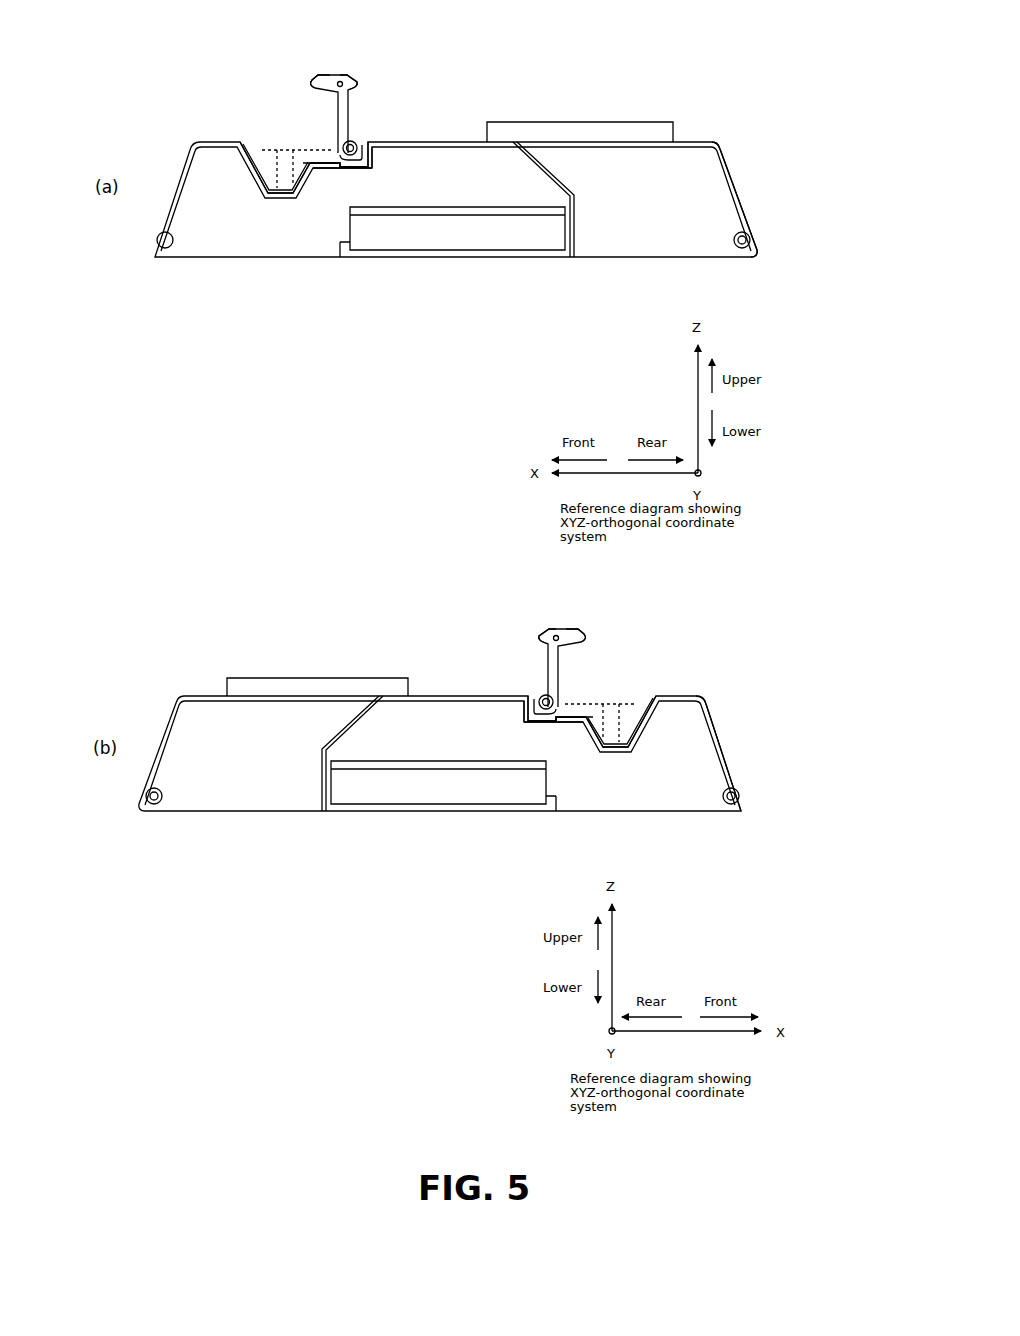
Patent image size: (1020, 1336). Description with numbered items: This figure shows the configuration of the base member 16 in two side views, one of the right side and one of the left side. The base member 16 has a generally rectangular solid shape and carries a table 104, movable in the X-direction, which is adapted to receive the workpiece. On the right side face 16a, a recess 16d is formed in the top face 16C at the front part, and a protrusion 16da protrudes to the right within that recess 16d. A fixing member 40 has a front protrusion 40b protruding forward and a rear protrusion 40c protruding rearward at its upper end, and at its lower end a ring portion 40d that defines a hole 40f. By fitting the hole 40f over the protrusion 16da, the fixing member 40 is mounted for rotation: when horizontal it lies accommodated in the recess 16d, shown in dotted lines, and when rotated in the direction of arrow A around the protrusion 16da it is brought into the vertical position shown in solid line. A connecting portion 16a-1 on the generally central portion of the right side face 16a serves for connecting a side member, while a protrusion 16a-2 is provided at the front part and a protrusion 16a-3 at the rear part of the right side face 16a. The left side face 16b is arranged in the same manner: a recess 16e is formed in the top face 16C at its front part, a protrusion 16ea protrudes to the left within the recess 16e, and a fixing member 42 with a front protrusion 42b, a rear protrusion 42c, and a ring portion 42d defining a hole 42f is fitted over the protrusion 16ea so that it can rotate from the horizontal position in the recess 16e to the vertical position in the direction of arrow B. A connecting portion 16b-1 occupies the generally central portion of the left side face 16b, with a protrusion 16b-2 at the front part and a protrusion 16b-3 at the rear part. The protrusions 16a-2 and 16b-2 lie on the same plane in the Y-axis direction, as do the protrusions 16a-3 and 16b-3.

The base member 16 is at (722, 146).
The top face 16C is at (215, 142).
The right side face 16a is at (200, 257).
The connecting portion 16a-1 is at (450, 235).
The protrusion 16a-2 is at (157, 240).
The protrusion 16a-3 is at (742, 257).
The left side face 16b is at (272, 795).
The connecting portion 16b-1 is at (465, 790).
The protrusion 16b-2 is at (728, 810).
The protrusion 16b-3 is at (153, 810).
The recess 16d is at (270, 192).
The protrusion 16da is at (342, 152).
The recess 16e is at (640, 750).
The protrusion 16ea is at (552, 722).
The fixing member 40 is at (350, 100).
The front protrusion 40b is at (352, 74).
The rear protrusion 40c is at (322, 74).
The ring portion 40d is at (370, 150).
The hole 40f is at (358, 140).
The fixing member 42 is at (546, 655).
The front protrusion 42b is at (544, 628).
The rear protrusion 42c is at (573, 628).
The ring portion 42d is at (528, 715).
The hole 42f is at (538, 695).
The table 104 is at (560, 130).